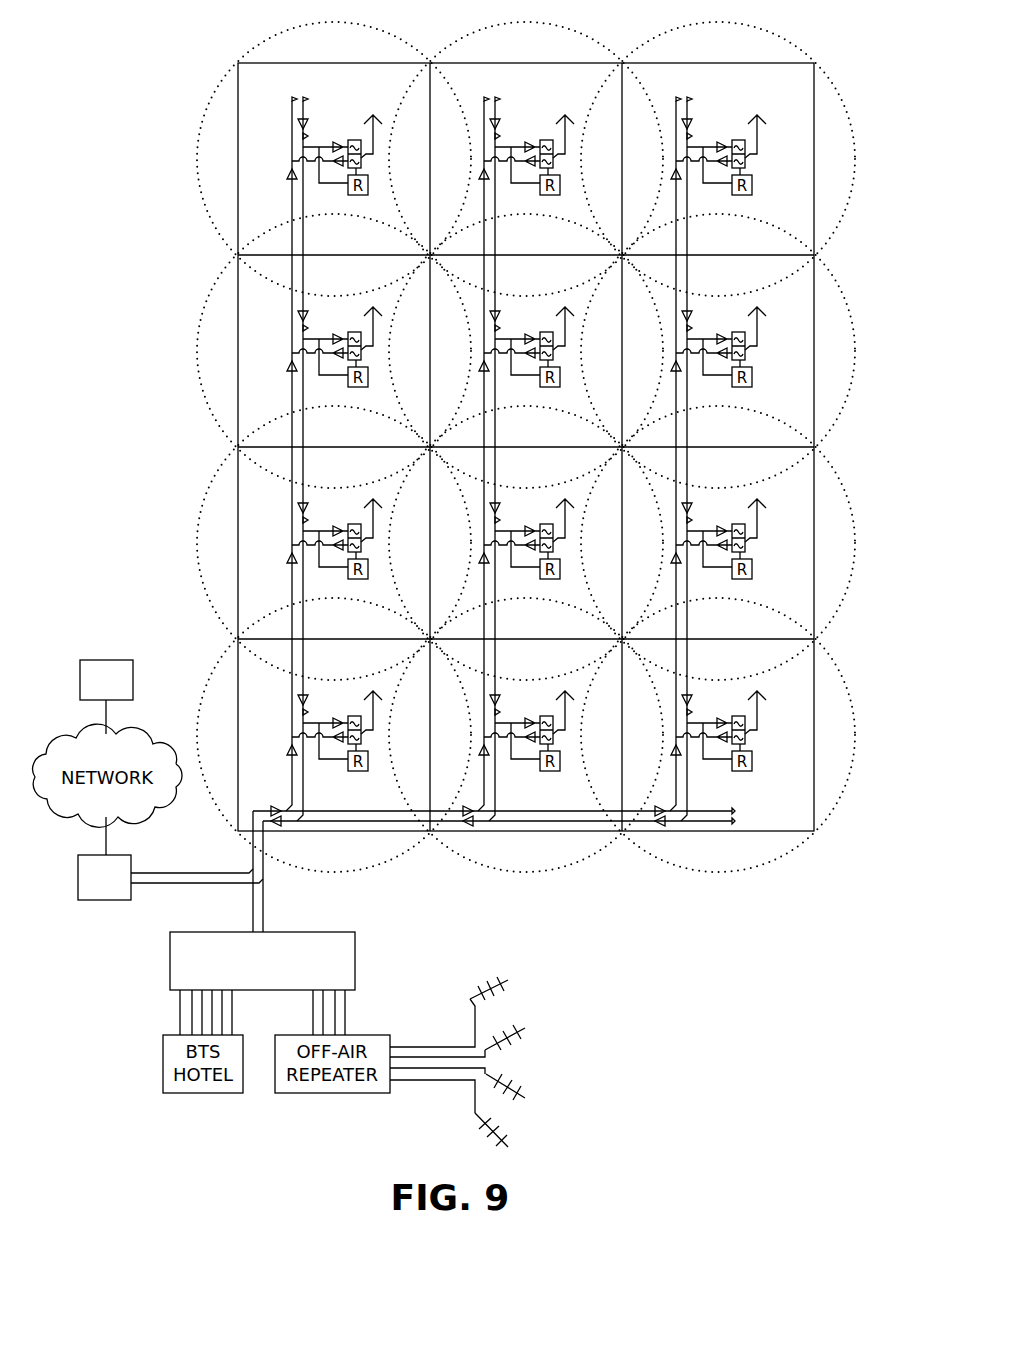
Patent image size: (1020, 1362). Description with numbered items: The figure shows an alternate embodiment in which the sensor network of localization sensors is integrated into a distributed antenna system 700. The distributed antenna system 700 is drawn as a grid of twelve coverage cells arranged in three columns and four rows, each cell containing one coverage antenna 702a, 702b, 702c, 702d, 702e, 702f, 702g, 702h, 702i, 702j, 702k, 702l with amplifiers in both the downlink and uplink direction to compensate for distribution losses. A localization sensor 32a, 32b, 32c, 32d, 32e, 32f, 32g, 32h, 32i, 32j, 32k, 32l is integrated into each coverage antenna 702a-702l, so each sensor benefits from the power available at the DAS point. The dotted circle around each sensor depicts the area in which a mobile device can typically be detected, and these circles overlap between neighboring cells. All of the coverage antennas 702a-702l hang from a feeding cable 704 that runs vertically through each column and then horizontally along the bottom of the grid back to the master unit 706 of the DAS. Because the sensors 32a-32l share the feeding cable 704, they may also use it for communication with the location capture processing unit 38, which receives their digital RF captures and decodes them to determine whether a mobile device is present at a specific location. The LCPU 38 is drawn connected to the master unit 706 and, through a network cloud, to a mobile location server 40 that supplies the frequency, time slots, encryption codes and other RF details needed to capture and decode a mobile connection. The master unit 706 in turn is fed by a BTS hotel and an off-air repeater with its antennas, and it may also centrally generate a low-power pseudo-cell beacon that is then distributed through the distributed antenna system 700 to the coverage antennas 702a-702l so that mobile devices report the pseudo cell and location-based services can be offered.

The distributed antenna system 700 is at (160, 163).
The coverage antenna 702a is at (355, 140).
The coverage antenna 702b is at (547, 140).
The coverage antenna 702c is at (739, 140).
The coverage antenna 702d is at (355, 332).
The coverage antenna 702e is at (547, 332).
The coverage antenna 702f is at (739, 332).
The coverage antenna 702g is at (355, 524).
The coverage antenna 702h is at (547, 524).
The coverage antenna 702i is at (739, 524).
The coverage antenna 702j is at (355, 716).
The coverage antenna 702k is at (547, 716).
The coverage antenna 702l is at (739, 716).
The localization sensor 32a is at (360, 195).
The localization sensor 32b is at (552, 195).
The localization sensor 32c is at (744, 195).
The localization sensor 32d is at (360, 387).
The localization sensor 32e is at (552, 387).
The localization sensor 32f is at (744, 387).
The localization sensor 32g is at (360, 579).
The localization sensor 32h is at (552, 579).
The localization sensor 32i is at (744, 579).
The localization sensor 32j is at (360, 771).
The localization sensor 32k is at (552, 771).
The localization sensor 32l is at (752, 761).
The feeding cable 704 is at (292, 591).
The master unit 706 is at (188, 932).
The mobile location server 40 is at (90, 658).
The location capture processing unit 38 is at (90, 855).